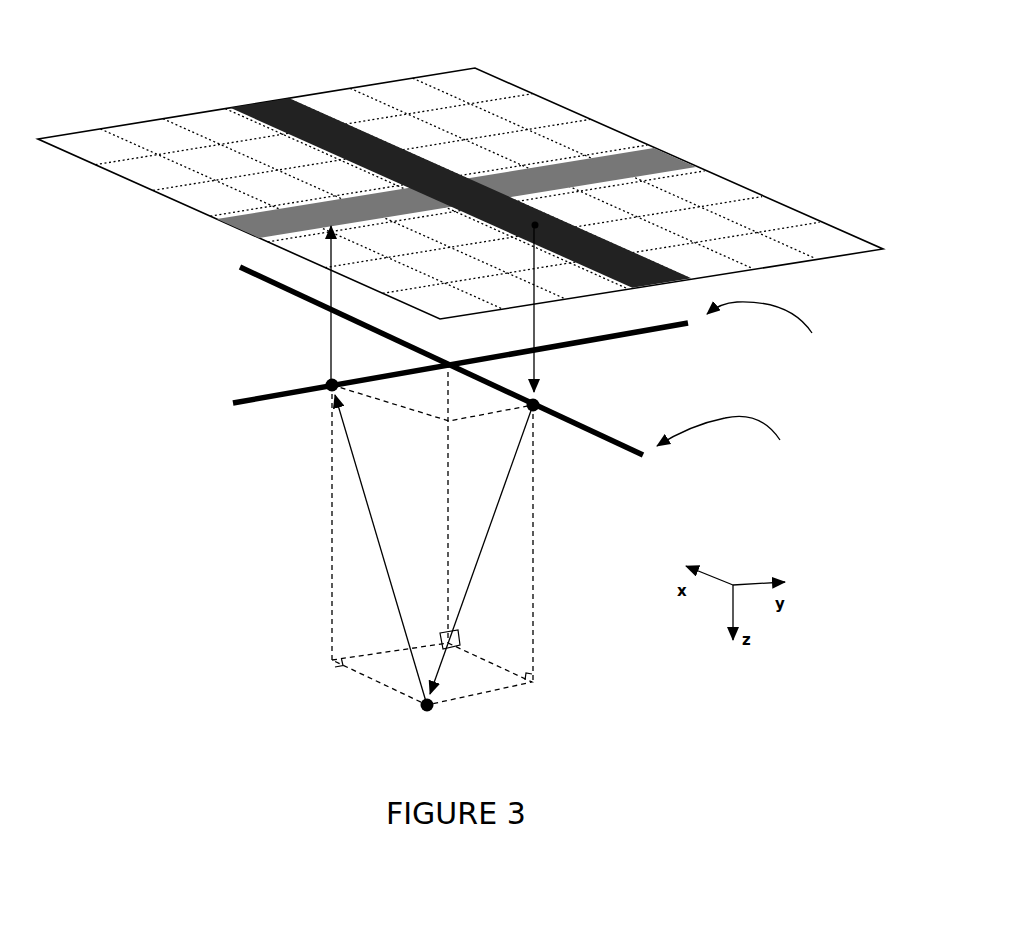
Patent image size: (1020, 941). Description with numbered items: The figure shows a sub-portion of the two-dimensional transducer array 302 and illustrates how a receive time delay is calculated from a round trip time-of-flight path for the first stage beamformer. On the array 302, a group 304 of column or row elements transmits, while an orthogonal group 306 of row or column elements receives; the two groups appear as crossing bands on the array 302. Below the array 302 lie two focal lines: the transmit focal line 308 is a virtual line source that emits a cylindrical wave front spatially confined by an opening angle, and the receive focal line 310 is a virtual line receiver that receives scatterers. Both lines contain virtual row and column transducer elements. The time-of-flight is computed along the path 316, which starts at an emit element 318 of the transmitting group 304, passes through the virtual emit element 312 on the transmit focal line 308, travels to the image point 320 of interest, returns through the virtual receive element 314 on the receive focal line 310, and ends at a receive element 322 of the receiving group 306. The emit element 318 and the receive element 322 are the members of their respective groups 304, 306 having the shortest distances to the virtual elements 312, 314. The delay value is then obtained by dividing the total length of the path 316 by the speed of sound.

The array 302 is at (476, 67).
The group of elements r_e 304 is at (283, 99).
The group of elements r_r 306 is at (660, 148).
The transmit focal line 308 is at (645, 458).
The receive focal line 310 is at (631, 335).
The virtual emit element r_vls 312 is at (537, 402).
The virtual receive element r_vlr 314 is at (329, 382).
The TOF path 316 is at (353, 533).
The emit element r_e 318 is at (537, 225).
The image point r_ip 320 is at (424, 710).
The receive element r_r 322 is at (323, 214).